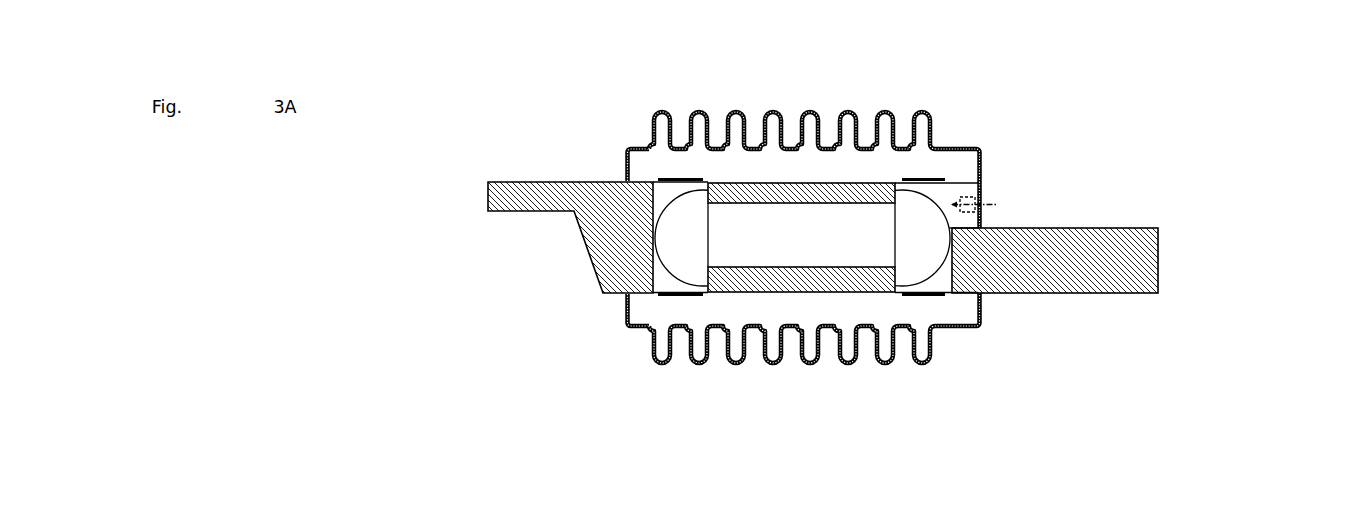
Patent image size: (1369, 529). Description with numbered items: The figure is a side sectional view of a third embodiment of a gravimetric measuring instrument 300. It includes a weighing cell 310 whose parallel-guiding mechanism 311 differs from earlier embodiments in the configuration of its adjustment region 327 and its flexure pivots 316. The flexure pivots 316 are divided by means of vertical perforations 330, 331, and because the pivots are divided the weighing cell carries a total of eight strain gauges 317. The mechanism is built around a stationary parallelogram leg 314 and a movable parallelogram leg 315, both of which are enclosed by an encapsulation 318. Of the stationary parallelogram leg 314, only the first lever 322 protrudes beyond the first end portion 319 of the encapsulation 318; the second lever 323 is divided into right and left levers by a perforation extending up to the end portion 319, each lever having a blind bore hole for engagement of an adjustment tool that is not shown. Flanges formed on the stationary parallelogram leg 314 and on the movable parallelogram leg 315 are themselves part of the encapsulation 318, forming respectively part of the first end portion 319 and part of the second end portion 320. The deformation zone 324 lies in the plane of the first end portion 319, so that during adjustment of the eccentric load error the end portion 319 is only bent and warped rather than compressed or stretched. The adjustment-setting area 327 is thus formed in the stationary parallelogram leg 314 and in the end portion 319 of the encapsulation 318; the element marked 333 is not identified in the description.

The gravimetric measuring instrument 300 is at (529, 121).
The weighing cell 310 is at (773, 378).
The parallel-guiding mechanism 311 is at (826, 303).
The stationary parallelogram leg 314 is at (963, 262).
The movable parallelogram leg 315 is at (600, 200).
The flexure pivots 316 is at (688, 285).
The strain gauges 317 is at (923, 297).
The encapsulation 318 is at (812, 111).
The first end portion 319 is at (983, 313).
The second end portion 320 is at (623, 305).
The first lever 322 is at (1130, 265).
The second lever 323 is at (955, 192).
The deformation zone 324 is at (984, 227).
The adjustment-setting area 327 is at (998, 192).
The vertical perforation 330 is at (678, 172).
The vertical perforation 331 is at (923, 168).
The stop 333 is at (972, 196).